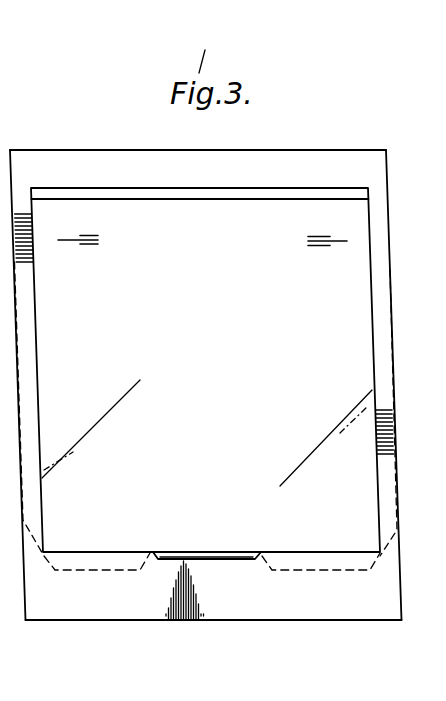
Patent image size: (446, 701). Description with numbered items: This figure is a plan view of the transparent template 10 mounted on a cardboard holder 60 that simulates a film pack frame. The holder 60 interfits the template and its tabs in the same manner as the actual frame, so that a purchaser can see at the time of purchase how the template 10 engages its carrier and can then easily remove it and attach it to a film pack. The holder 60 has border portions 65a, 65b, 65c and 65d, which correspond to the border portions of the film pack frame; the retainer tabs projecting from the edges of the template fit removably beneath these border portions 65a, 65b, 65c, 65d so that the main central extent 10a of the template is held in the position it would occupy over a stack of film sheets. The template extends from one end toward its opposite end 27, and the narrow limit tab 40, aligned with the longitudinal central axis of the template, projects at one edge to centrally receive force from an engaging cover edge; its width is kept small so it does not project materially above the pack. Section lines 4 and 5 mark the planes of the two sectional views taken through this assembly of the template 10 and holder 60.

The template 10 is at (203, 208).
The main central extent of the template 10a is at (207, 427).
The opposite end of the template 27 is at (285, 199).
The limit tab 40 is at (182, 550).
The cardboard holder 60 is at (362, 628).
The holder border portion 65a is at (27, 259).
The holder border portion 65b is at (376, 261).
The holder border portion 65c is at (126, 158).
The holder border portion 65d is at (152, 602).
The section line 4- 4 is at (211, 541).
The section line 5- 5 is at (52, 502).